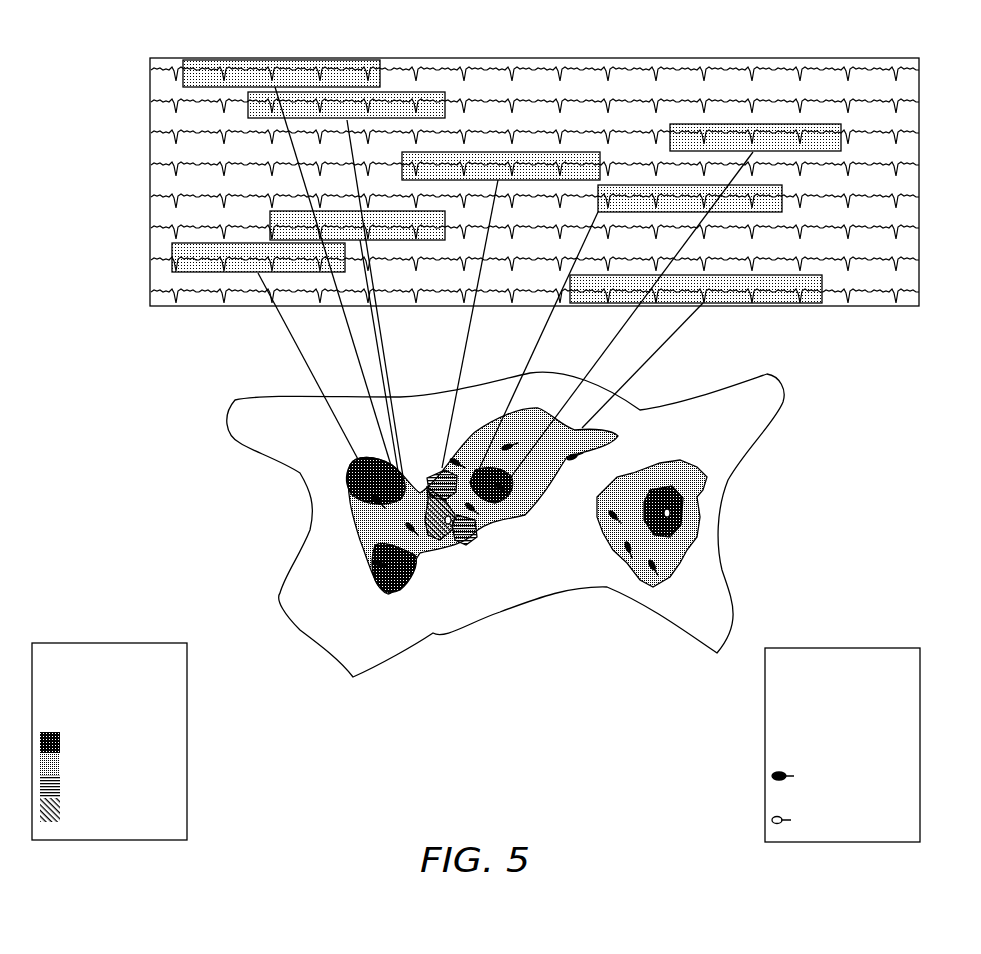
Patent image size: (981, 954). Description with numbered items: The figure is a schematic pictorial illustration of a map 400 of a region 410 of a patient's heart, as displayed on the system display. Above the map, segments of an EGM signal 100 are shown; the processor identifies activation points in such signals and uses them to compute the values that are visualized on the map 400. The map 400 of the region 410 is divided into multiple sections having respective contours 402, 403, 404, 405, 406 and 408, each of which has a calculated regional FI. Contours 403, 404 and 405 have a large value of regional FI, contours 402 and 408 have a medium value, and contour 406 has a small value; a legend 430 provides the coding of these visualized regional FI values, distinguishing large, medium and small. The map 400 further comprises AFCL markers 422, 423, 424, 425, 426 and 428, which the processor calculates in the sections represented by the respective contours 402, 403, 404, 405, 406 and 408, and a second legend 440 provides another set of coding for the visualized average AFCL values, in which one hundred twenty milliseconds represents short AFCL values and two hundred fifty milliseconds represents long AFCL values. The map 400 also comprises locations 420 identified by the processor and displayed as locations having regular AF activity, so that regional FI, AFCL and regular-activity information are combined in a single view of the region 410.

The EGM signal 100 is at (770, 124).
The map 400 is at (808, 409).
The region 410 is at (757, 425).
The contour 402 is at (704, 565).
The contour 403 is at (690, 495).
The contour 404 is at (405, 590).
The contour 405 is at (328, 483).
The contour 406 is at (470, 547).
The contour 408 is at (558, 487).
The locations 420 is at (421, 518).
The AFCL marker 422 is at (613, 520).
The AFCL marker 423 is at (672, 514).
The AFCL marker 424 is at (366, 564).
The AFCL marker 425 is at (370, 508).
The AFCL marker 426 is at (457, 548).
The AFCL marker 428 is at (565, 437).
The legend 430 is at (82, 642).
The legend 440 is at (898, 648).